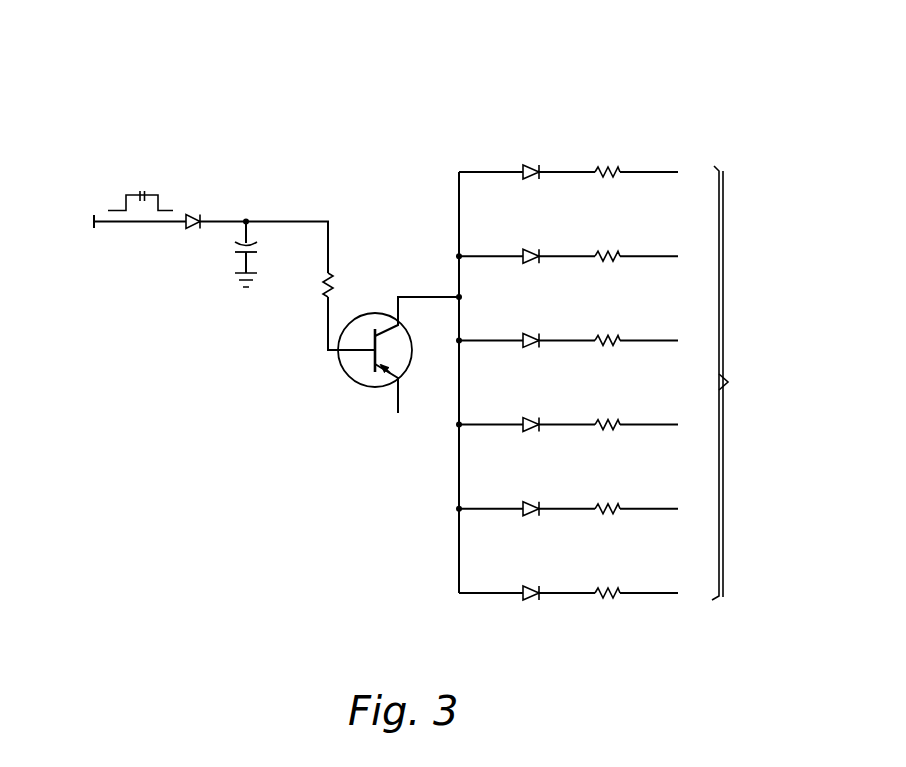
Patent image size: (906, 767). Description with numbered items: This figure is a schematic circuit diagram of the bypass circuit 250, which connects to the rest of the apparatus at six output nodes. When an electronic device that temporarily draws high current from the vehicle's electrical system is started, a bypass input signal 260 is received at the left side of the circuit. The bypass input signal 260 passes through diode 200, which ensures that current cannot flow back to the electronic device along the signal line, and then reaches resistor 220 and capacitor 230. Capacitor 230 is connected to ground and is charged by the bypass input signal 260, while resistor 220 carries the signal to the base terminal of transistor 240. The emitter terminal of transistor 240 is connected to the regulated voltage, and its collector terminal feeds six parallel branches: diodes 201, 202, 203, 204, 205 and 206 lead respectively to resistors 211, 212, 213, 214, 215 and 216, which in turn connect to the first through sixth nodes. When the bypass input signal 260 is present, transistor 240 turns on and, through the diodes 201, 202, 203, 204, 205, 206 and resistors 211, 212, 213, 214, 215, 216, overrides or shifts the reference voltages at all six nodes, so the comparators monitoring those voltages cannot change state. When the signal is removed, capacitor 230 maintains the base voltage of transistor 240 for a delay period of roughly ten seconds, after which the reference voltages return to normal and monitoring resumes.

The diode 200 is at (194, 229).
The diode 201 is at (536, 165).
The diode 202 is at (536, 249).
The diode 203 is at (536, 333).
The diode 204 is at (536, 418).
The diode 205 is at (536, 502).
The diode 206 is at (530, 598).
The resistor 211 is at (610, 165).
The resistor 212 is at (610, 249).
The resistor 213 is at (610, 333).
The resistor 214 is at (610, 418).
The resistor 215 is at (610, 502).
The resistor 216 is at (607, 598).
The resistor 220 is at (337, 281).
The capacitor 230 is at (263, 245).
The transistor 240 is at (352, 388).
The bypass circuit 250 is at (355, 72).
The bypass input signal 260 is at (138, 177).